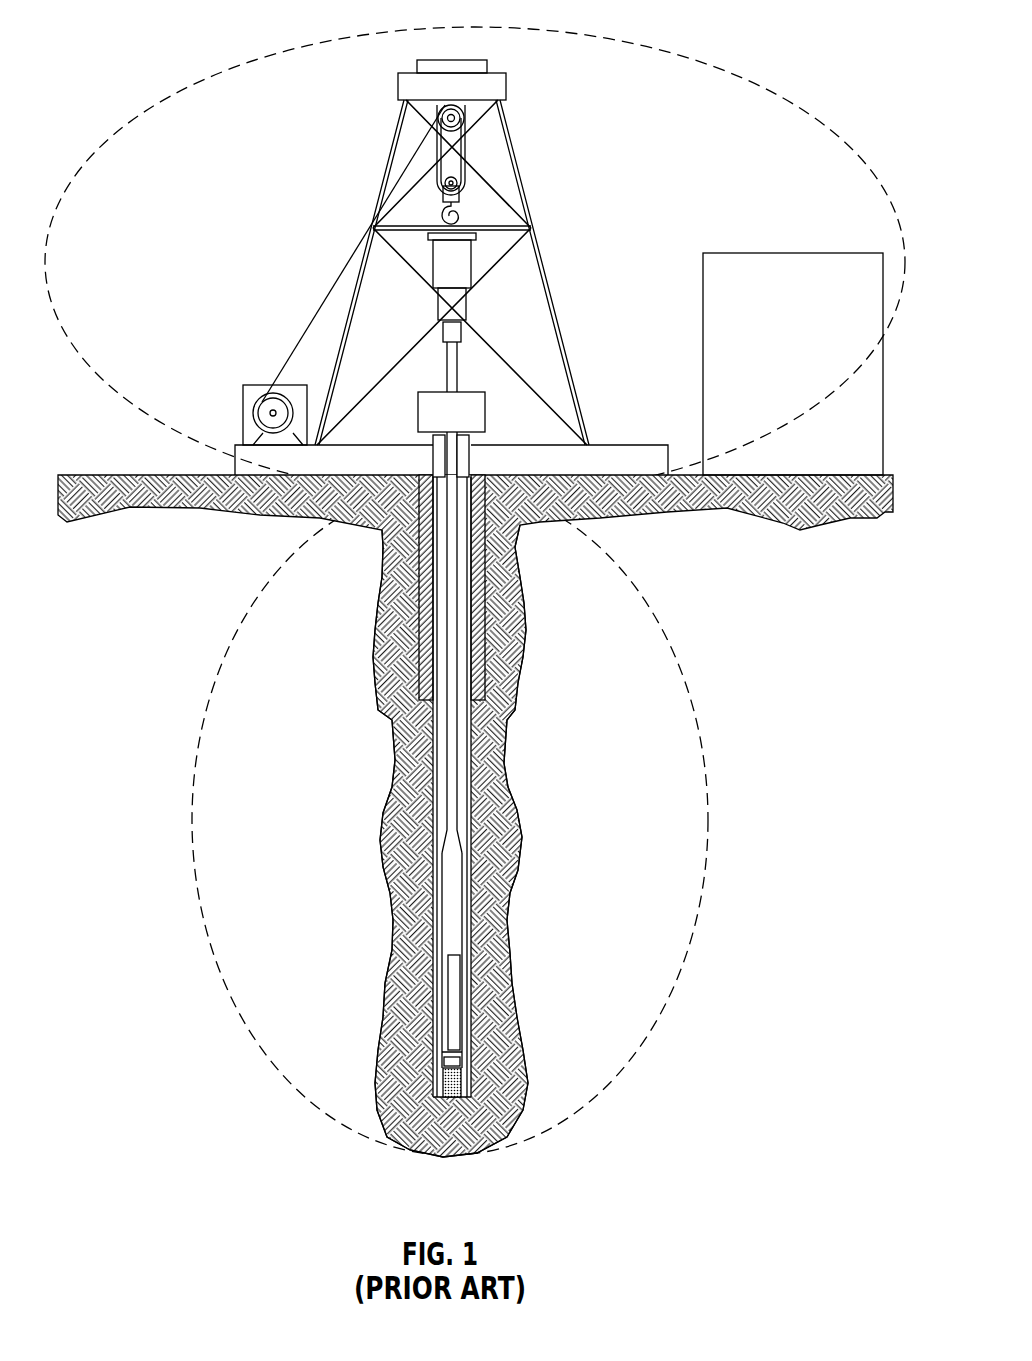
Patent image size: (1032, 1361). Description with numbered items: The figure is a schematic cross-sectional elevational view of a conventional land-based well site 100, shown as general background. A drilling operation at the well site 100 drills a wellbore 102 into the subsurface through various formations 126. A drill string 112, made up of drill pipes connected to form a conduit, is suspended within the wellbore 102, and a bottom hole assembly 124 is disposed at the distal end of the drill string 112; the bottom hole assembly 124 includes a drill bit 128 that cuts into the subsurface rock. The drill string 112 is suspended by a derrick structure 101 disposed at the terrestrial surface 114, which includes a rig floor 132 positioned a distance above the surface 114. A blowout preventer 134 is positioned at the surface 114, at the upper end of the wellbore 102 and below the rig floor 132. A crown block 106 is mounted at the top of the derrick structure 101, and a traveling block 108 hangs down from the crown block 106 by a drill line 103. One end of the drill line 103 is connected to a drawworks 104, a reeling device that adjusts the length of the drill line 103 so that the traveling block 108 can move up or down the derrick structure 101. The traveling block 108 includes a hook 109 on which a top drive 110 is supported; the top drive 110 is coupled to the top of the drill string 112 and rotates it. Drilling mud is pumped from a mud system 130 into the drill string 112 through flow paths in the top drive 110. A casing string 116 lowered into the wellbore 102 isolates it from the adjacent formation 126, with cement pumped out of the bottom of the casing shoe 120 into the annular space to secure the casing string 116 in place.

The well site 100 is at (185, 97).
The derrick structure 101 is at (393, 128).
The wellbore 102 is at (195, 775).
The drill line 103 is at (330, 285).
The drawworks 104 is at (245, 387).
The crown block 106 is at (507, 87).
The traveling block 108 is at (467, 181).
The hook 109 is at (460, 213).
The top drive 110 is at (468, 268).
The drill string 112 is at (460, 383).
The terrestrial surface 114 is at (473, 437).
The casing string 116 is at (483, 622).
The casing shoe 120 is at (521, 692).
The bottom hole assembly 124 is at (463, 898).
The formation 126 is at (463, 955).
The drill bit 128 is at (468, 1092).
The mud system 130 is at (823, 253).
The rig floor 132 is at (397, 223).
The blowout preventer 134 is at (418, 410).